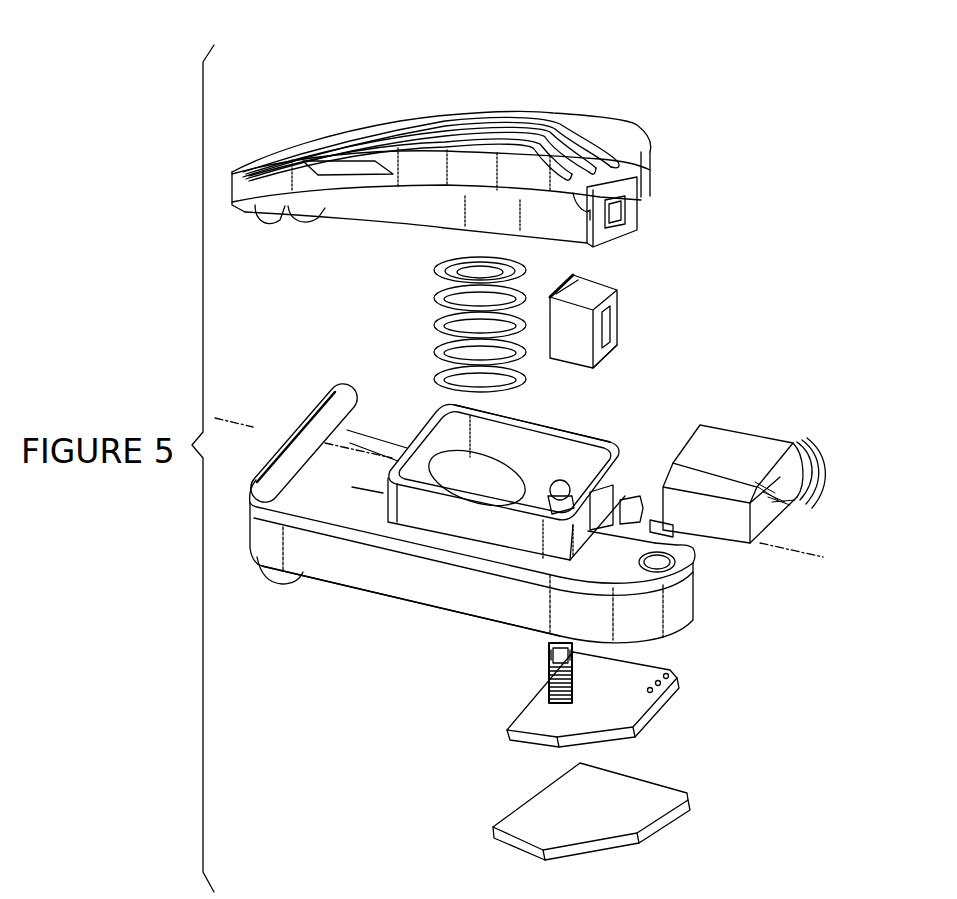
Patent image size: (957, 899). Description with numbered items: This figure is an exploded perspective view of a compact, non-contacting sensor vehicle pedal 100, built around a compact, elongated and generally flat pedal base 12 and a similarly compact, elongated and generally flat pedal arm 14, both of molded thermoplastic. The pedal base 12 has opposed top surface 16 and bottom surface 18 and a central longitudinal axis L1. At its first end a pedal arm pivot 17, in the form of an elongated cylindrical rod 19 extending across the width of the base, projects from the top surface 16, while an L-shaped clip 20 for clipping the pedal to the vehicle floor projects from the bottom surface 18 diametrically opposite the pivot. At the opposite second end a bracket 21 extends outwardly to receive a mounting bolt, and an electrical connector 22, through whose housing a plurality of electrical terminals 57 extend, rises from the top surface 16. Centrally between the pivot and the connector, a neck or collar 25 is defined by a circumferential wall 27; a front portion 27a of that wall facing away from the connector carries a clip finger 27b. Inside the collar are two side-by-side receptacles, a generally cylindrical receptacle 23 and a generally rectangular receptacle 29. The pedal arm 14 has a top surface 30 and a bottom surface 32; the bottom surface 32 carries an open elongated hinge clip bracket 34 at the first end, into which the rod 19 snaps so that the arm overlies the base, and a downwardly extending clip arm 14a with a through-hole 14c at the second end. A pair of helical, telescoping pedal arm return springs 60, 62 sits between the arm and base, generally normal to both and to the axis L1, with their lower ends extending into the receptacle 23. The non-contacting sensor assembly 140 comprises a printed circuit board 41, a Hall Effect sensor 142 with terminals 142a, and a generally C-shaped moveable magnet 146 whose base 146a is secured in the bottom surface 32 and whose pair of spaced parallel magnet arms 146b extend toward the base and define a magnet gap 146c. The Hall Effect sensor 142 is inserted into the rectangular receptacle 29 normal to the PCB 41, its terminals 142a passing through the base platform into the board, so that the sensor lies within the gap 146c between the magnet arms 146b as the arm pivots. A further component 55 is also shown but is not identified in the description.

The non-contacting sensor pedal 100 is at (521, 439).
The pedal arm 14 is at (470, 159).
The top surface of pedal arm 30 is at (431, 116).
The bottom surface of pedal arm 32 is at (417, 236).
The hinge clip bracket 34 is at (276, 236).
The clip arm 14a is at (645, 217).
The through-hole 14c is at (659, 199).
The pedal arm return spring 60 is at (472, 318).
The pedal arm return spring 62 is at (496, 264).
The non-contacting sensor assembly 140 is at (639, 556).
The moveable magnet 146 is at (662, 311).
The magnet base 146a is at (656, 273).
The magnet arms 146b is at (649, 355).
The magnet gap 146c is at (688, 327).
The electrical connector 22 is at (707, 457).
The electrical terminals 57 is at (809, 453).
The front portion of circumferential wall 27a is at (653, 462).
The clip finger 27b is at (670, 450).
The Hall Effect sensor 142 is at (511, 687).
The sensor terminals 142a is at (510, 690).
The printed circuit board 41 is at (618, 699).
The bottom plate 55 is at (609, 811).
The pedal base 12 is at (519, 522).
The bottom surface of pedal base 18 is at (411, 611).
The L-shaped clip 20 is at (271, 601).
The cylindrical rod 19 is at (249, 469).
The bracket 21 is at (698, 584).
The top surface of pedal base 16 is at (377, 405).
The pedal arm pivot 17 is at (304, 425).
The central longitudinal axis L1 is at (519, 476).
The circumferential wall 27 is at (593, 491).
The neck or collar 25 is at (532, 404).
The cylindrical receptacle 23 is at (595, 501).
The rectangular receptacle 29 is at (587, 446).